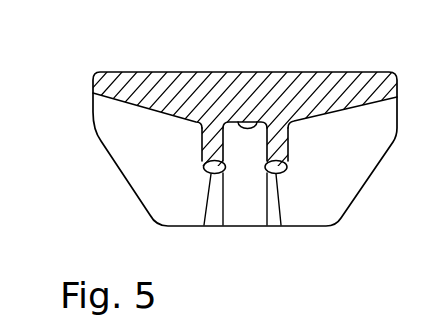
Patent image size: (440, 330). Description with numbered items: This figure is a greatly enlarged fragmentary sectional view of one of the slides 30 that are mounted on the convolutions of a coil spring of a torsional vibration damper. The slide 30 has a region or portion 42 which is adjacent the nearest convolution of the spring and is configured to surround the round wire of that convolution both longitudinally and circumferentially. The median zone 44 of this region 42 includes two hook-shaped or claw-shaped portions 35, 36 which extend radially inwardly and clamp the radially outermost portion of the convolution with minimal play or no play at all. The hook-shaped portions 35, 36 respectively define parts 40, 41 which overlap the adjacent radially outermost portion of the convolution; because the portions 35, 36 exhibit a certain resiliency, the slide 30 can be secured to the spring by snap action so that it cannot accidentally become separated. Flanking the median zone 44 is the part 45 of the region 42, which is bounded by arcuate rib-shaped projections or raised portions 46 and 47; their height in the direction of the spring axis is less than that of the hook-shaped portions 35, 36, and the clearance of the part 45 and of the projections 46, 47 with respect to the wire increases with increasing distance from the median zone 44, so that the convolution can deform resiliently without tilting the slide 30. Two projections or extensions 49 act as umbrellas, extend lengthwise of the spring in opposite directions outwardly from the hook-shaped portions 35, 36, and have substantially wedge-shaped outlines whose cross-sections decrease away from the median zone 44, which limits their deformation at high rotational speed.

The slide 30 is at (213, 88).
The projections or extensions 49 is at (122, 88).
The region or portion of the slide 42 is at (238, 202).
The median zone 44 is at (258, 119).
The hook-shaped portion 35 is at (213, 145).
The hook-shaped portion 36 is at (278, 155).
The overlapping part 41 is at (282, 163).
The arcuate rib-shaped projection 46 is at (201, 183).
The part of the region 45 is at (217, 207).
The overlapping part 40 is at (222, 224).
The arcuate rib-shaped projection 47 is at (272, 214).